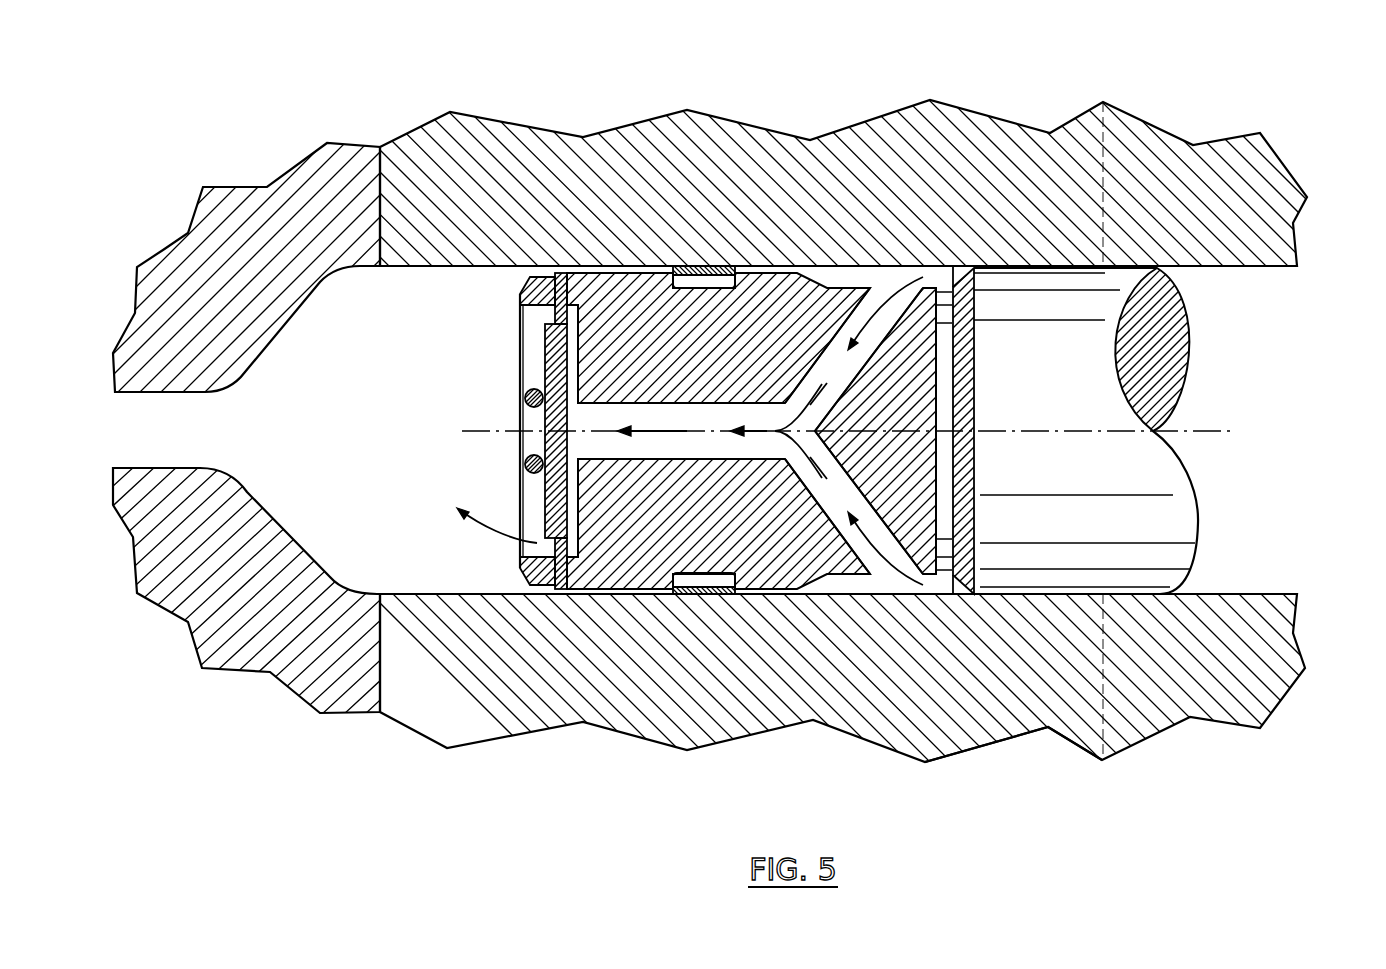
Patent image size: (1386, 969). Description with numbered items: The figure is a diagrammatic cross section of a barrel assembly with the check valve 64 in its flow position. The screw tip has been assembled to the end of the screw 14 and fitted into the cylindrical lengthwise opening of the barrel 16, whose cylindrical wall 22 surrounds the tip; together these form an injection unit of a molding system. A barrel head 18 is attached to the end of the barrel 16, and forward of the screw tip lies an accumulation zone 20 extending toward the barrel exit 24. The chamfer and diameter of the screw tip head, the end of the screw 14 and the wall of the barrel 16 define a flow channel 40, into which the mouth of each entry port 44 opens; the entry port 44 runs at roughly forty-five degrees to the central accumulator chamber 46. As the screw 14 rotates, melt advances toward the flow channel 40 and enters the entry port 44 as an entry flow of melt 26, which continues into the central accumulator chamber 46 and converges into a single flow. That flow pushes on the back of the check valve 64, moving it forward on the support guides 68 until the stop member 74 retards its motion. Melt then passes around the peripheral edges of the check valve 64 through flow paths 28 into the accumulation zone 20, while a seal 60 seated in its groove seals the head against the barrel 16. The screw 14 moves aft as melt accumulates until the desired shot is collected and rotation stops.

The screw 14 is at (1077, 357).
The barrel 16 is at (812, 185).
The barrel head 18 is at (310, 200).
The accumulation zone 20 is at (333, 530).
The cylindrical wall 22 is at (1292, 430).
The barrel exit 24 is at (158, 437).
The entry flow of melt into screw tip 26 is at (990, 717).
The exit flow of melt out of screw tip 28 is at (460, 350).
The flow channel 40 is at (953, 272).
The entry port 44 is at (882, 287).
The central accumulator chamber 46 is at (742, 453).
The seal 60 is at (705, 275).
The check valve 64 is at (545, 305).
The support guide 68 is at (558, 330).
The stop member 74 is at (526, 396).